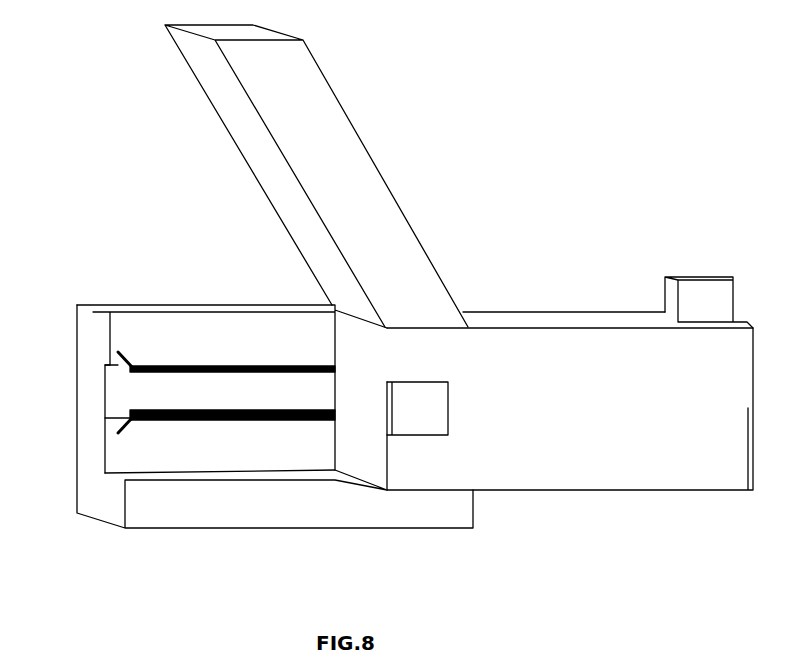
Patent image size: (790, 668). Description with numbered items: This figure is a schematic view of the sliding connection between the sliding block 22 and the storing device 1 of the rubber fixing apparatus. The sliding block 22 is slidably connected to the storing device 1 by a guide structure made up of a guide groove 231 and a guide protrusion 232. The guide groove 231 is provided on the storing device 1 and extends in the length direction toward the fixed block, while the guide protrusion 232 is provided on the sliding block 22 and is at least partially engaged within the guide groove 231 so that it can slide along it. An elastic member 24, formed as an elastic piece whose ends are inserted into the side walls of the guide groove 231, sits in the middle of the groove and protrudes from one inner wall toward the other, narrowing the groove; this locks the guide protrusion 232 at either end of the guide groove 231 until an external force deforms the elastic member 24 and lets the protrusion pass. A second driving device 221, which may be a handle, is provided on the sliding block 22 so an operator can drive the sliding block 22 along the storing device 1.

The storing device 1 is at (238, 340).
The sliding block 22 is at (388, 265).
The second driving device 221 is at (703, 293).
The guide protrusion 232 is at (447, 388).
The guide groove 231 is at (182, 392).
The elastic member 24 is at (245, 420).